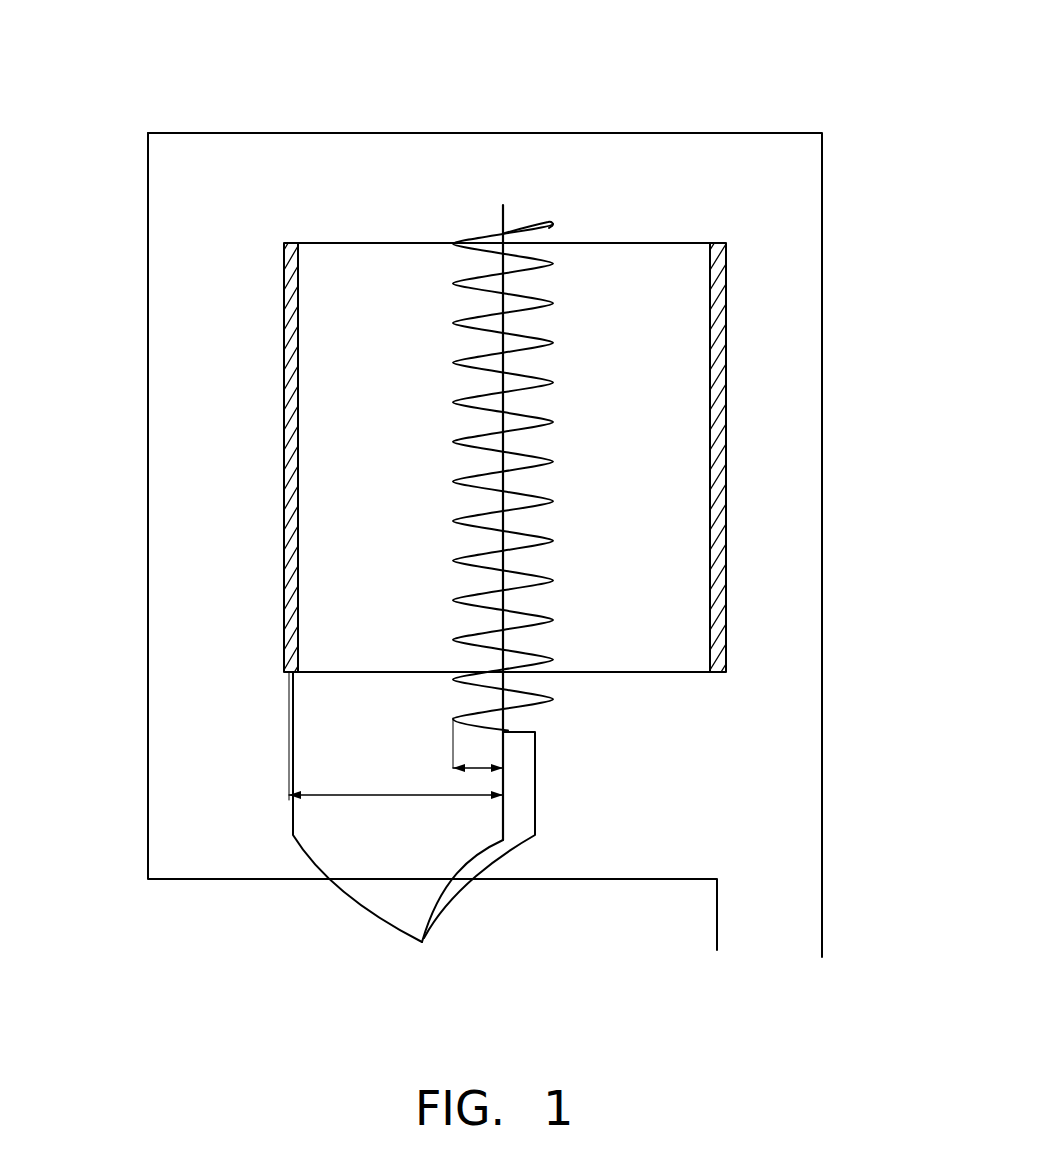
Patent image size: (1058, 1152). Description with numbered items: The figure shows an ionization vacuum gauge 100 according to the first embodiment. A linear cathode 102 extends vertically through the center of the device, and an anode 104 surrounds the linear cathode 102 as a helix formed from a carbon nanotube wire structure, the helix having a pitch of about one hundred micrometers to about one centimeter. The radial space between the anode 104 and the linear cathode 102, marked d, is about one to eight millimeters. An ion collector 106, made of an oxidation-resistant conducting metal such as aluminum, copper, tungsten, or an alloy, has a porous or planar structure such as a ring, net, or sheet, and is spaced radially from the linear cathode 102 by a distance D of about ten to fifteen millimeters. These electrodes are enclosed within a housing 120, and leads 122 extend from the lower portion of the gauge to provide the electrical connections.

The ionization vacuum gauge 100 is at (519, 24).
The linear cathode 102 is at (503, 207).
The anode 104 is at (553, 263).
The ion collector 106 is at (287, 577).
The housing 120 is at (821, 775).
The lead 122 is at (414, 827).